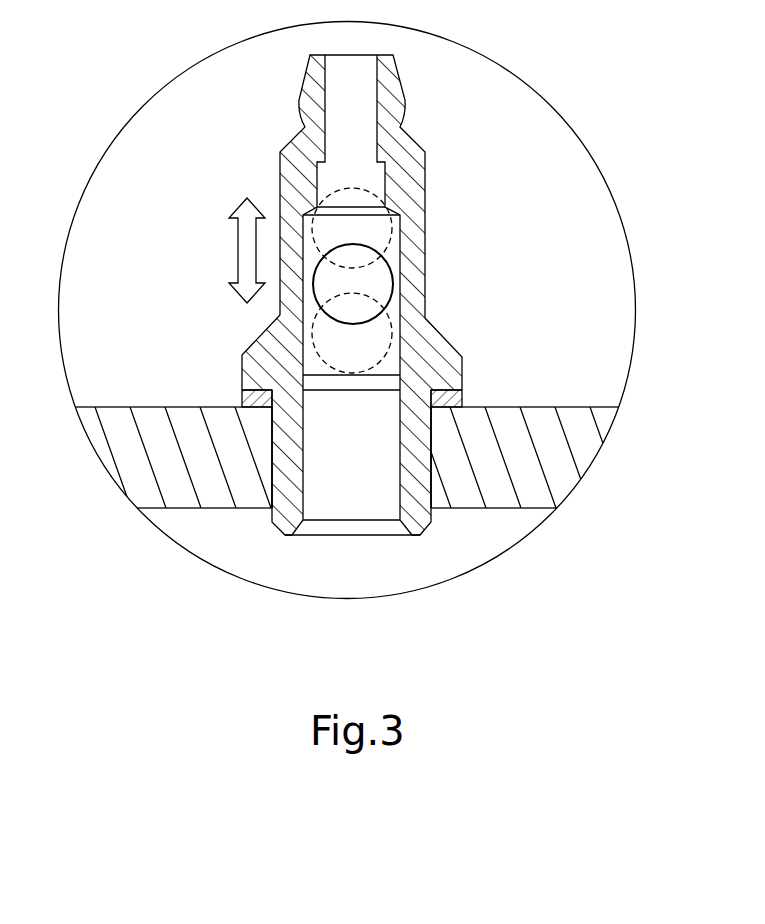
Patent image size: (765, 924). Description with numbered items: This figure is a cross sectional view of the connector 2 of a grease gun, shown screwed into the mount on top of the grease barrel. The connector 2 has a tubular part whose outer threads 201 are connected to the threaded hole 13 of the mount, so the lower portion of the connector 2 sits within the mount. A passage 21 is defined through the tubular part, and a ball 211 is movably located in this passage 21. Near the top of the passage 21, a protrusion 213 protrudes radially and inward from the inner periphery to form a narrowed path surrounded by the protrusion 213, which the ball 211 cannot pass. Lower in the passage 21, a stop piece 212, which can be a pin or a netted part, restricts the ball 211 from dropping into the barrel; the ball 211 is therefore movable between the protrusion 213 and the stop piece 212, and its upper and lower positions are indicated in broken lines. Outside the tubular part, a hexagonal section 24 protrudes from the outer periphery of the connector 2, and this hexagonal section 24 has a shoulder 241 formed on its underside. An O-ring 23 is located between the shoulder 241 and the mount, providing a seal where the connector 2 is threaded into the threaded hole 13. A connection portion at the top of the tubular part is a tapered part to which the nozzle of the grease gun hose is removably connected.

The connector 2 is at (268, 175).
The passage 21 is at (387, 236).
The ball 211 is at (383, 284).
The stop piece 212 is at (386, 375).
The protrusion 213 is at (387, 173).
The O-ring 23 is at (243, 398).
The hexagonal section 24 is at (240, 362).
The shoulder 241 is at (240, 388).
The threaded hole 13 is at (433, 428).
The outer threads 201 is at (433, 463).